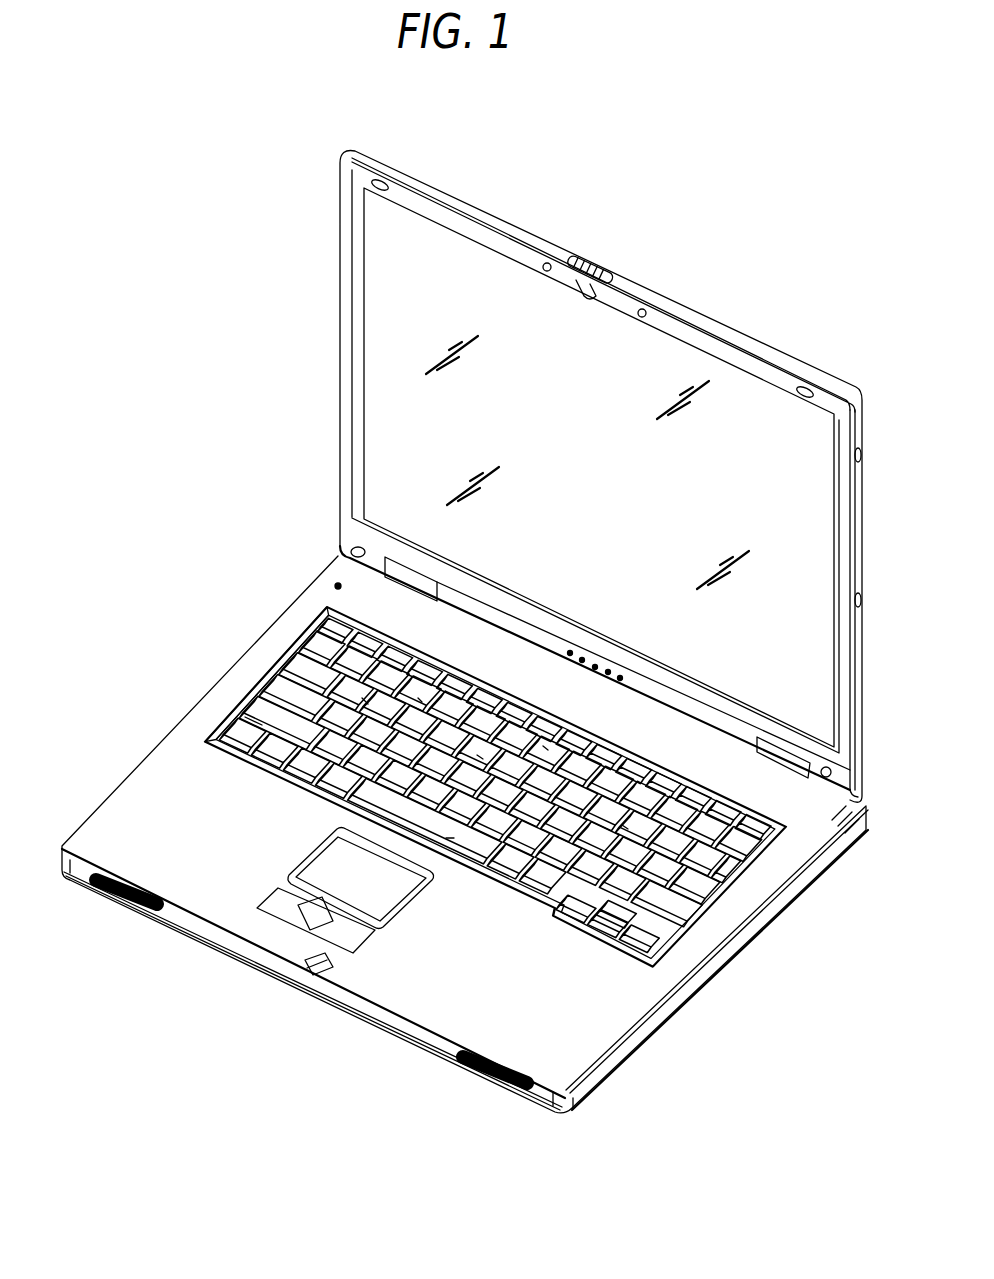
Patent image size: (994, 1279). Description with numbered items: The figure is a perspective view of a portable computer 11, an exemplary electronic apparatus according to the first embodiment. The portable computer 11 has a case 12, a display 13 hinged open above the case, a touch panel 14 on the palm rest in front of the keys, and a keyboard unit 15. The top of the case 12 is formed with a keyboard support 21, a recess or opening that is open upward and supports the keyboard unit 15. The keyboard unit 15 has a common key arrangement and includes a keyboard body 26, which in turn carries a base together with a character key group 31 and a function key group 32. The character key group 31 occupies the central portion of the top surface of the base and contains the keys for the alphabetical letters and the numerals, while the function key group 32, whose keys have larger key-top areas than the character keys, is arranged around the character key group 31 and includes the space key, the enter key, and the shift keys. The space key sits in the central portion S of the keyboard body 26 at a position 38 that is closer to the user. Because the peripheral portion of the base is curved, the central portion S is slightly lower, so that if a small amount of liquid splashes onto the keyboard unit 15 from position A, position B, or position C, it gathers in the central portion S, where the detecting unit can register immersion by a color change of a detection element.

The portable computer 11 is at (686, 206).
The case 12 is at (104, 828).
The display 13 is at (390, 323).
The touch panel 14 is at (378, 895).
The keyboard unit 15 is at (250, 656).
The keyboard support 21 is at (272, 692).
The keyboard body 26 is at (668, 930).
The character key group 31 is at (428, 694).
The function key group 32 is at (253, 718).
The position closer to a user 38 is at (451, 846).
The position A is at (359, 695).
The position B is at (485, 748).
The position C is at (629, 818).
The central portion S is at (545, 748).